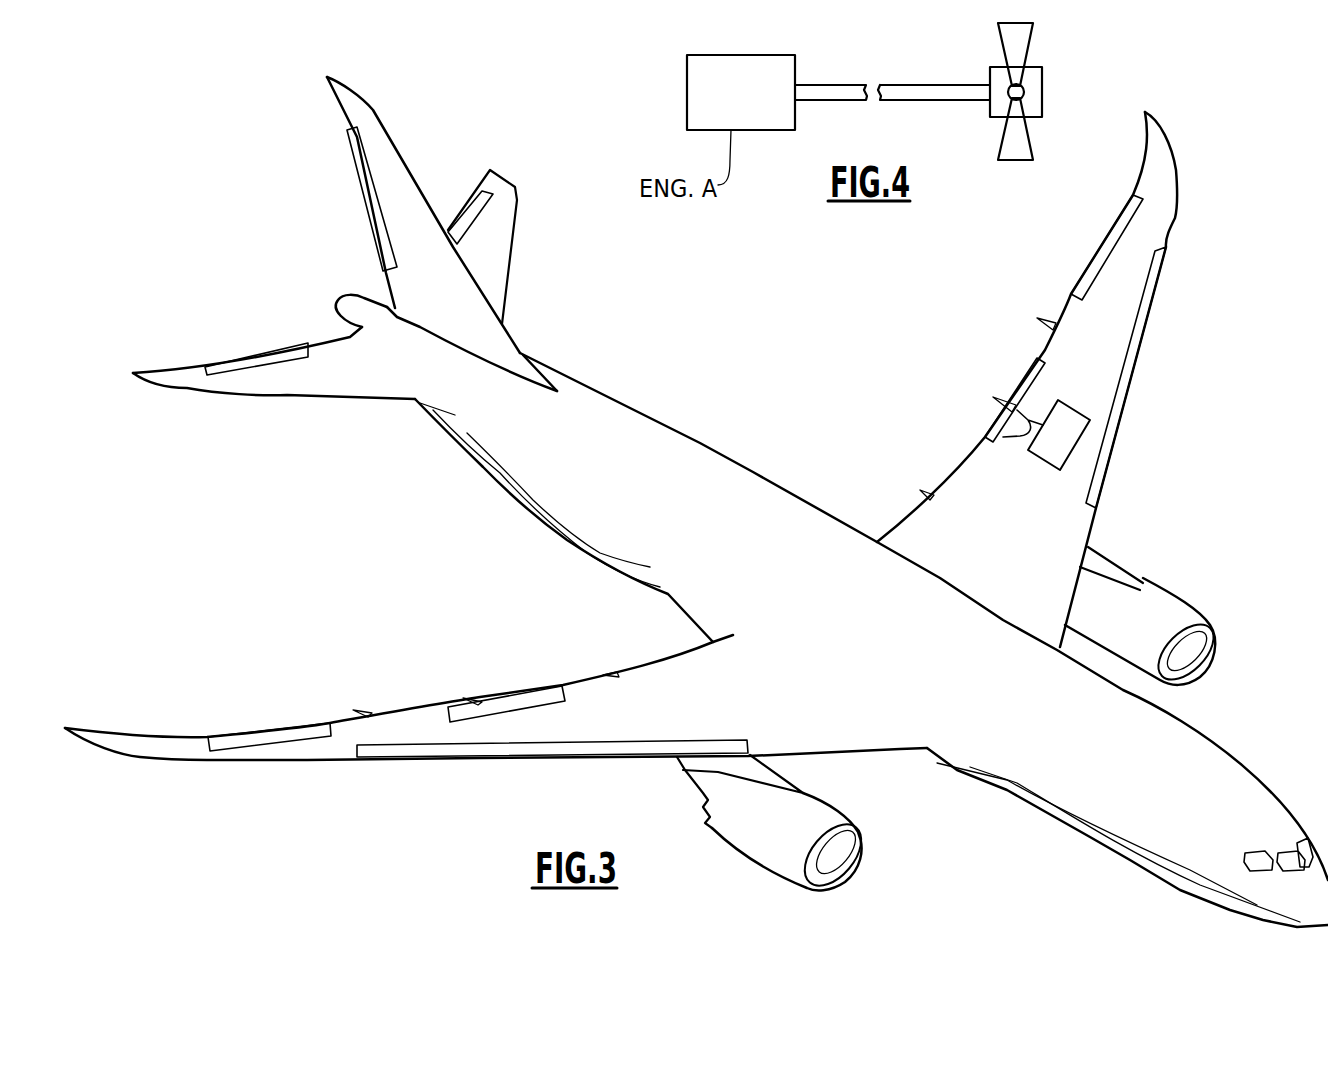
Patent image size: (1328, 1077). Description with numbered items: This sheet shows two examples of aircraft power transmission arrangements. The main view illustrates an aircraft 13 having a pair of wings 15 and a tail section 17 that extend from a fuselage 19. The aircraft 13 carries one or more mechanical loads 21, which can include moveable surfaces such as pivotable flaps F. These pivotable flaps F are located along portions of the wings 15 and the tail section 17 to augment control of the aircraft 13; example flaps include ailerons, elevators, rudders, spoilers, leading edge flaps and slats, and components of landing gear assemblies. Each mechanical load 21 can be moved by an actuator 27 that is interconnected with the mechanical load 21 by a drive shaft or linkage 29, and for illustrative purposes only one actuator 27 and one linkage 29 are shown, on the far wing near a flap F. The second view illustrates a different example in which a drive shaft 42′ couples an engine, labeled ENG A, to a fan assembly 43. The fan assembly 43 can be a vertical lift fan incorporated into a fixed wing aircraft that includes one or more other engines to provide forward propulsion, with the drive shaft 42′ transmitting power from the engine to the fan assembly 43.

In FIG. 3, the aircraft 13 is at (231, 79).
In FIG. 3, the wings 15 is at (312, 763).
In FIG. 3, the tail section 17 is at (441, 165).
In FIG. 3, the fuselage 19 is at (753, 472).
In FIG. 3, the mechanical load 21 is at (263, 367).
In FIG. 3, the actuator 27 is at (1043, 463).
In FIG. 3, the drive shaft or linkage 29 is at (990, 427).
In FIG. 4, the drive shaft 42′ is at (840, 85).
In FIG. 4, the fan assembly 43 is at (1070, 48).
In FIG. 3, the pivotable flaps F is at (357, 193).